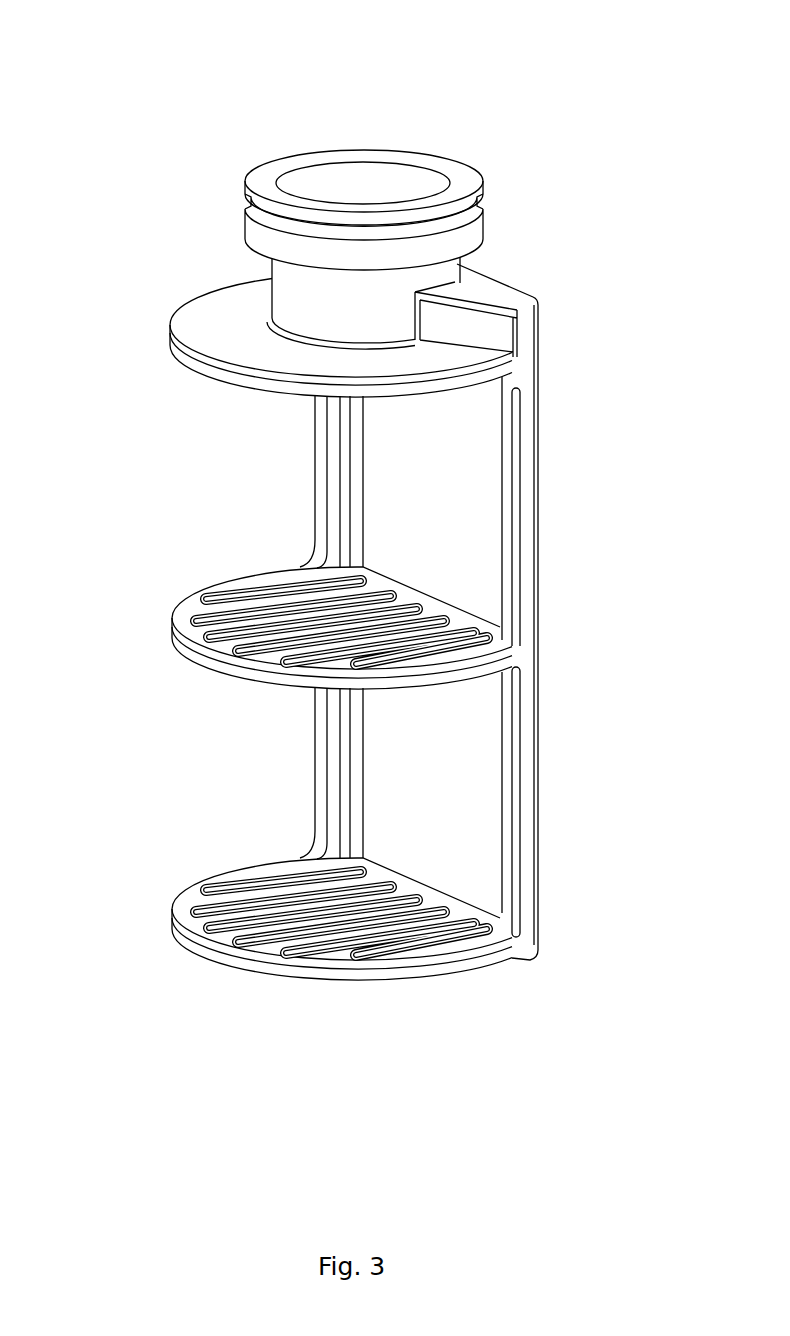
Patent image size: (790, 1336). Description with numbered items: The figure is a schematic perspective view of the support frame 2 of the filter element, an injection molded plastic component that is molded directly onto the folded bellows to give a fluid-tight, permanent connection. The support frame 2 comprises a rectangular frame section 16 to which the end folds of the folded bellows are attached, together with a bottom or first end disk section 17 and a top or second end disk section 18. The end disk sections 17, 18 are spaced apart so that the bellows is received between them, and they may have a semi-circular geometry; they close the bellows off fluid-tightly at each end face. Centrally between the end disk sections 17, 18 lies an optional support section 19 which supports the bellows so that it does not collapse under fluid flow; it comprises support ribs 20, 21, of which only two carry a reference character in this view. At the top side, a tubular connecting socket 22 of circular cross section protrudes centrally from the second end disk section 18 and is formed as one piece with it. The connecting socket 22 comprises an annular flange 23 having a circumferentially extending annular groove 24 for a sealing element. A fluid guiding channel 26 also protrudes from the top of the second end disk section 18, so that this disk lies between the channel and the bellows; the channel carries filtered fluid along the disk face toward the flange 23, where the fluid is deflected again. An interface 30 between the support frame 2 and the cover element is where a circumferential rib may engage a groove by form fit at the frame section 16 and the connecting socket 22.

The support frame 2 is at (369, 88).
The frame section 16 is at (528, 516).
The first end disk section 17 is at (437, 970).
The second end disk section 18 is at (202, 299).
The support section 19 is at (170, 623).
The support rib 20 is at (207, 641).
The support rib 21 is at (388, 596).
The connecting socket 22 is at (293, 303).
The annular flange 23 is at (270, 180).
The annular groove 24 is at (268, 225).
The fluid guiding channel 26 is at (487, 330).
The interface 30 is at (542, 728).